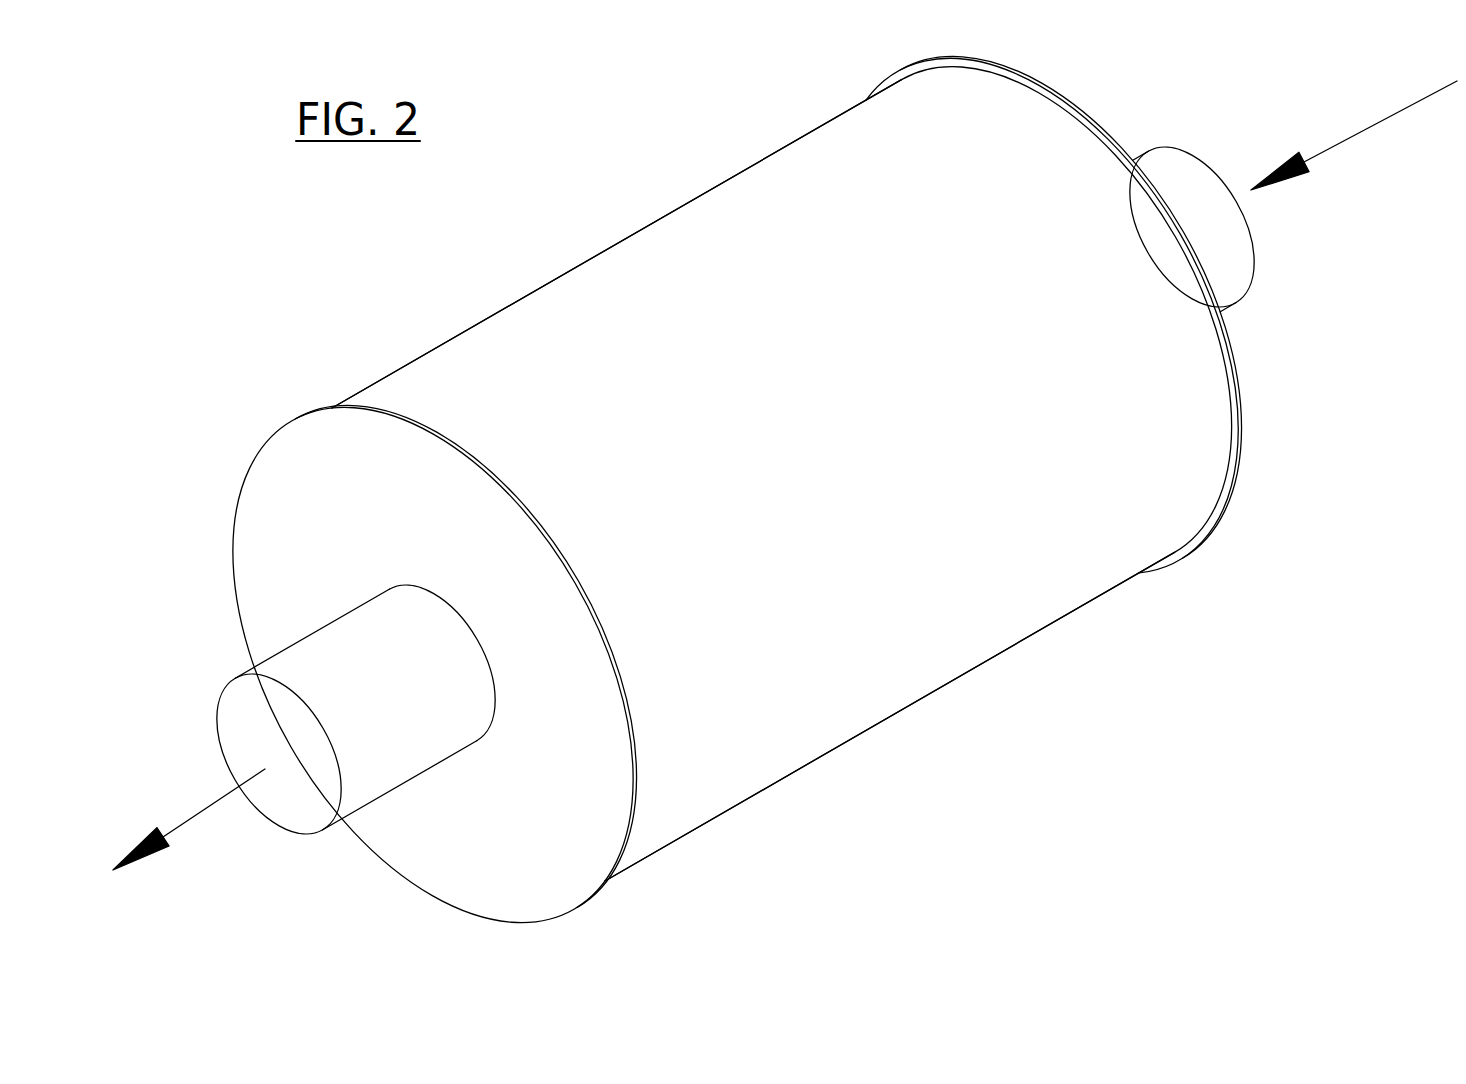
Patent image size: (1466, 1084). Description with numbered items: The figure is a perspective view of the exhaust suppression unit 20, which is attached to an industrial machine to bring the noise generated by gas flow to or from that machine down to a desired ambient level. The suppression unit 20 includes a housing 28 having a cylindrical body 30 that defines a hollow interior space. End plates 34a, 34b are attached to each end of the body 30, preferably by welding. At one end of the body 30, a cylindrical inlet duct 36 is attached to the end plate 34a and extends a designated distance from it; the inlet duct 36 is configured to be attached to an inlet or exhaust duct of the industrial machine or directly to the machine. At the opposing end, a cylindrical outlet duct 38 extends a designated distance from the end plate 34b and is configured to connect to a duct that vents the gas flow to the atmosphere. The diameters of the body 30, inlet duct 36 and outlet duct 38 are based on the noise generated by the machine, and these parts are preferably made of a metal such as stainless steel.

The suppression unit 20 is at (360, 341).
The housing 28 is at (901, 735).
The cylindrical body 30 is at (1012, 572).
The end plate 34a is at (1253, 363).
The end plate 34b is at (508, 840).
The inlet duct 36 is at (1165, 177).
The outlet duct 38 is at (343, 650).